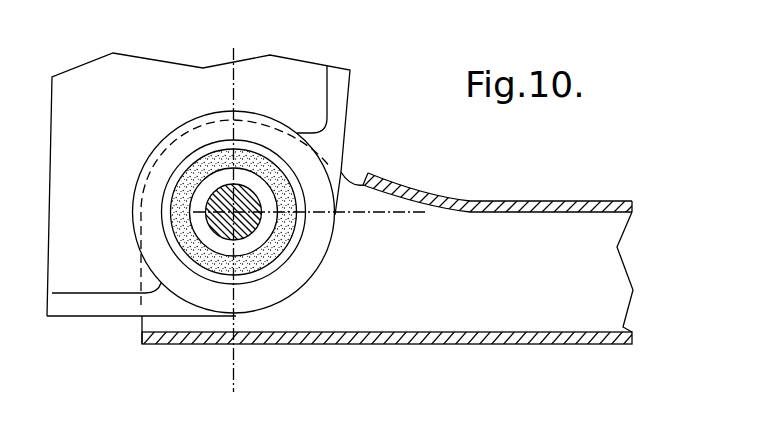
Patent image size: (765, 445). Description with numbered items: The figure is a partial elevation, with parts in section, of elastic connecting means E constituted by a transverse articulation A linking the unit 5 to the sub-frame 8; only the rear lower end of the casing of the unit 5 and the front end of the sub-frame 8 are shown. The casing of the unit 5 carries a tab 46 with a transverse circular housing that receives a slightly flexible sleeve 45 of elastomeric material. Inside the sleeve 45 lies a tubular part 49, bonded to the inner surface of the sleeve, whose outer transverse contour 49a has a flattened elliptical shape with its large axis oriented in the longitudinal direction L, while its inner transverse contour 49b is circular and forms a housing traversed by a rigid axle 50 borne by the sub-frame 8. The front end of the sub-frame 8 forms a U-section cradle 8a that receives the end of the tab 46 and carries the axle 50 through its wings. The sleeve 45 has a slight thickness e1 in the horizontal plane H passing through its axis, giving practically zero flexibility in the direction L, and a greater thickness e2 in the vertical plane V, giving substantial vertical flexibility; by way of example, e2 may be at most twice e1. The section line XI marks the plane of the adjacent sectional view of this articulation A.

The unit 5 is at (73, 265).
The tab 46 is at (320, 140).
The sleeve 45 is at (220, 262).
The tubular part 49 is at (241, 230).
The outer transverse contour 49a is at (193, 203).
The inner transverse contour 49b is at (256, 221).
The axle 50 is at (268, 226).
The sub-frame 8 is at (538, 343).
The cradle 8a is at (187, 332).
The horizontal plane H is at (408, 210).
The articulation A is at (305, 243).
The connecting means E is at (131, 326).
The vertical plane V is at (247, 39).
The section line XI is at (233, 101).
The longitudinal direction L is at (282, 409).
The thickness e1 is at (262, 212).
The thickness e2 is at (220, 187).